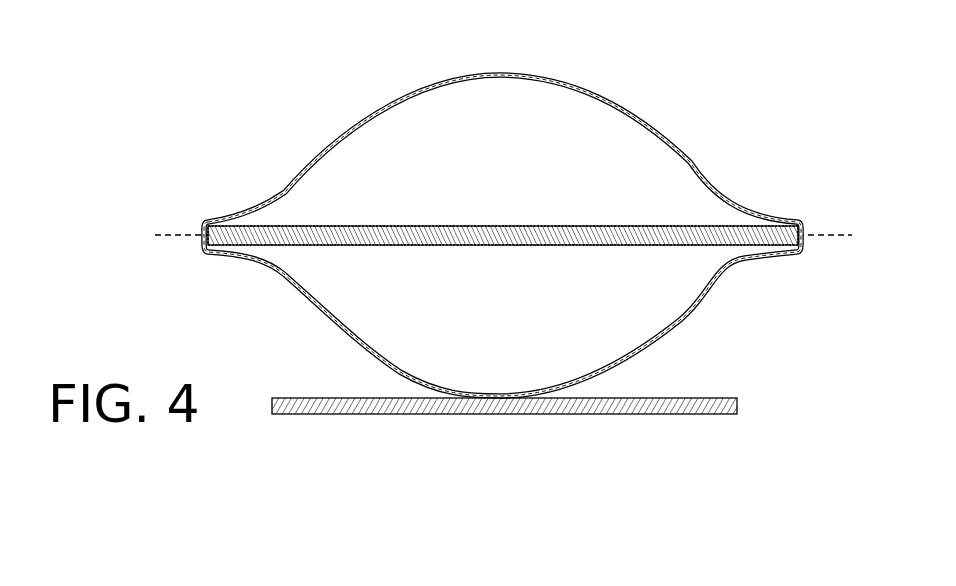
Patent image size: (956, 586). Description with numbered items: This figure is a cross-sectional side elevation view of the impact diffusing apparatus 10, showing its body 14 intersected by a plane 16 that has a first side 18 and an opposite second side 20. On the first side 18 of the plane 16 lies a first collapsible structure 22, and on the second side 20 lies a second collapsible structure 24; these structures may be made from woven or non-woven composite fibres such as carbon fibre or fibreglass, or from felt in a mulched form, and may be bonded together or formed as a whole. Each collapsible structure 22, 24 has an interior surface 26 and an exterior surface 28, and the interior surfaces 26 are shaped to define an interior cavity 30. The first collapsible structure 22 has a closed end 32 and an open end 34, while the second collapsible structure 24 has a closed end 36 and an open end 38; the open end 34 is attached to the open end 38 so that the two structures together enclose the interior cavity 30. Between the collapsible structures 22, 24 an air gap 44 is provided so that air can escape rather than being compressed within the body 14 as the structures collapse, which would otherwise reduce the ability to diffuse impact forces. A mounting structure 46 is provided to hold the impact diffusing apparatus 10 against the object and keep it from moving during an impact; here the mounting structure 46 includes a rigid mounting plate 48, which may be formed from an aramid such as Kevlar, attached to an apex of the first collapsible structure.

The impact diffusing apparatus 10 is at (215, 82).
The body 14 is at (660, 135).
The plane 16 is at (180, 235).
The first side 18 is at (182, 209).
The second side 20 is at (806, 276).
The first collapsible structure 22 is at (372, 118).
The second collapsible structure 24 is at (330, 320).
The interior surface 26 is at (394, 131).
The exterior surface 28 is at (729, 168).
The interior cavity 30 is at (543, 108).
The closed end 32 is at (500, 74).
The open end 34 is at (209, 220).
The closed end 36 is at (520, 397).
The open end 38 is at (210, 252).
The air gap 44 is at (312, 236).
The mounting structure 46 is at (718, 399).
The rigid mounting plate 48 is at (660, 405).